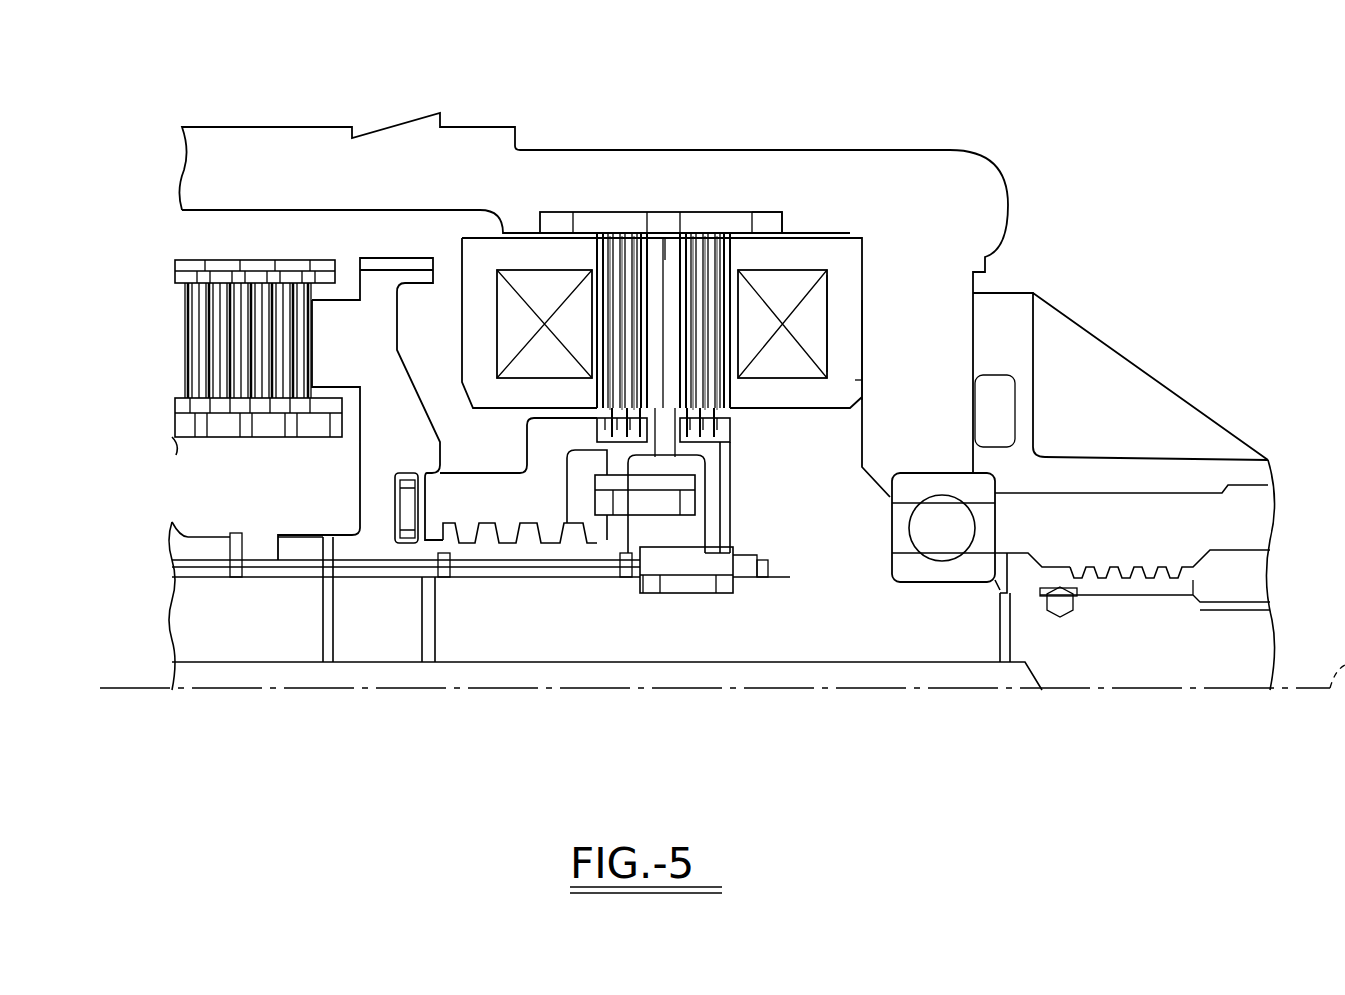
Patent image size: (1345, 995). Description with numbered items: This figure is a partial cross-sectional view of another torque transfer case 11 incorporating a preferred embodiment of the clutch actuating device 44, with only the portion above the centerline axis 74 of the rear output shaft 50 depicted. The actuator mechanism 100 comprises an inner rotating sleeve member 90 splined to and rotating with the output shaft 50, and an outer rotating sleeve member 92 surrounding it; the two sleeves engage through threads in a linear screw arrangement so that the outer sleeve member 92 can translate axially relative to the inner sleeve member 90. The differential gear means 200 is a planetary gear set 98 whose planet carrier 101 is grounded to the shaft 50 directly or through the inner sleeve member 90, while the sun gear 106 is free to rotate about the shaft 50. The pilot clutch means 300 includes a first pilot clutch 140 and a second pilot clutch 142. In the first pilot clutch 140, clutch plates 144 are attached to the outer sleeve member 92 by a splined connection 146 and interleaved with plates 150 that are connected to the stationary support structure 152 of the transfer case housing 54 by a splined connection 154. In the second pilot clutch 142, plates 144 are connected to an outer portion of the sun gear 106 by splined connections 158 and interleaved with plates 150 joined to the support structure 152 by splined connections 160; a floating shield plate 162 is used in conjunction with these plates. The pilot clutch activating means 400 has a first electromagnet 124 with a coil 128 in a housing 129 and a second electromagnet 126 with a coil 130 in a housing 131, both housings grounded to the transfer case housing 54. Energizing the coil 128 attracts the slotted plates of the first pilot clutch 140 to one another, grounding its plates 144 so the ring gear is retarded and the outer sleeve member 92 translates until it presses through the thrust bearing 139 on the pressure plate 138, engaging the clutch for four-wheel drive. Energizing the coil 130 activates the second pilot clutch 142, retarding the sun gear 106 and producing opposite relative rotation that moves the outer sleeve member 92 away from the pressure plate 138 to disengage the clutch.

The torque transfer case 11 is at (1105, 143).
The clutch actuating device 44 is at (1003, 275).
The rear output shaft 50 is at (1110, 688).
The transfer case housing 54 is at (283, 127).
The centerline axis 74 is at (748, 688).
The inner rotating sleeve member 90 is at (510, 557).
The outer rotating sleeve member 92 is at (545, 522).
The planetary gear set 98 is at (747, 500).
The actuator mechanism 100 is at (515, 652).
The planet carrier 101 is at (690, 480).
The sun gear 106 is at (702, 565).
The first electromagnet 124 is at (450, 322).
The second electromagnet 126 is at (830, 286).
The coil 128 is at (502, 340).
The housing 129 is at (463, 248).
The coil 130 is at (820, 318).
The housing 131 is at (862, 342).
The pressure plate 138 is at (377, 457).
The thrust bearing 139 is at (402, 507).
The first pilot clutch 140 is at (625, 185).
The second pilot clutch 142 is at (723, 175).
The clutch plates 144 is at (727, 425).
The splined connection 146 is at (603, 432).
The plates 150 is at (722, 237).
The stationary support structure 152 is at (648, 212).
The splined connection 154 is at (593, 233).
The splined connections 158 is at (720, 432).
The splined connections 160 is at (735, 232).
The floating shield plate 162 is at (670, 253).
The differential gear means 200 is at (773, 548).
The pilot clutch means 300 is at (690, 140).
The pilot clutch activating means 400 is at (865, 388).